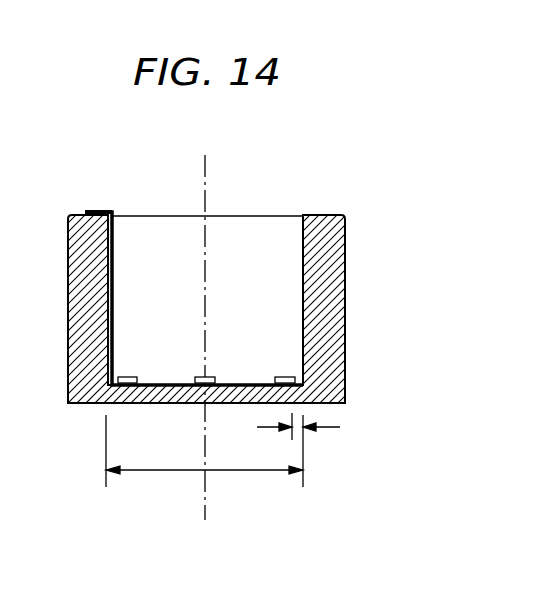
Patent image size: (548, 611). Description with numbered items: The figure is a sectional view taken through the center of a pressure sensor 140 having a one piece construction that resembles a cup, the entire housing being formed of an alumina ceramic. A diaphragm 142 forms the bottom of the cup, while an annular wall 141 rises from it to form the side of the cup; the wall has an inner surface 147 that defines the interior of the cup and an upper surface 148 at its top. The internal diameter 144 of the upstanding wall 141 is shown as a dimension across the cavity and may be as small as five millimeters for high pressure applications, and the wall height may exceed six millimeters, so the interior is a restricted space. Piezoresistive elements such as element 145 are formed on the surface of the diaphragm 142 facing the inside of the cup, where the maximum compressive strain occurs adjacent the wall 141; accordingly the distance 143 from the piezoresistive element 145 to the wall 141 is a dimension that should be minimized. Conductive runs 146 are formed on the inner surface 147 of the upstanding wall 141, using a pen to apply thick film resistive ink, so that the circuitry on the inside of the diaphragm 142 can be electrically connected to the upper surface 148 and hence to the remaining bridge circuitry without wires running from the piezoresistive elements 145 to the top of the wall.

The pressure sensor 140 is at (345, 380).
The annular wall 141 is at (337, 285).
The diaphragm 142 is at (240, 384).
The distance 143 is at (319, 427).
The internal diameter 144 is at (225, 470).
The piezoresistive element 145 is at (279, 378).
The conductive runs 146 is at (112, 275).
The inner surface 147 is at (303, 275).
The upper surface 148 is at (321, 215).